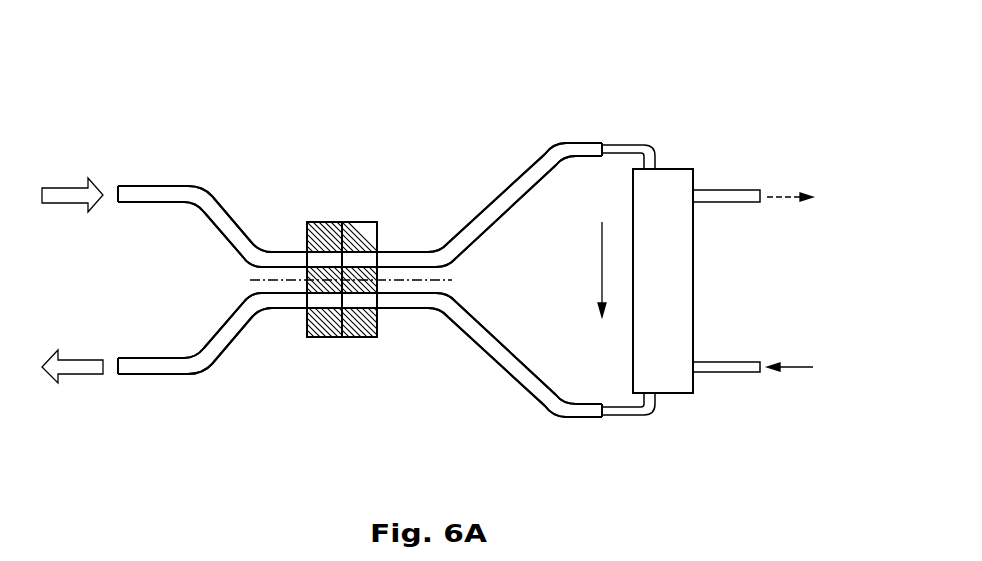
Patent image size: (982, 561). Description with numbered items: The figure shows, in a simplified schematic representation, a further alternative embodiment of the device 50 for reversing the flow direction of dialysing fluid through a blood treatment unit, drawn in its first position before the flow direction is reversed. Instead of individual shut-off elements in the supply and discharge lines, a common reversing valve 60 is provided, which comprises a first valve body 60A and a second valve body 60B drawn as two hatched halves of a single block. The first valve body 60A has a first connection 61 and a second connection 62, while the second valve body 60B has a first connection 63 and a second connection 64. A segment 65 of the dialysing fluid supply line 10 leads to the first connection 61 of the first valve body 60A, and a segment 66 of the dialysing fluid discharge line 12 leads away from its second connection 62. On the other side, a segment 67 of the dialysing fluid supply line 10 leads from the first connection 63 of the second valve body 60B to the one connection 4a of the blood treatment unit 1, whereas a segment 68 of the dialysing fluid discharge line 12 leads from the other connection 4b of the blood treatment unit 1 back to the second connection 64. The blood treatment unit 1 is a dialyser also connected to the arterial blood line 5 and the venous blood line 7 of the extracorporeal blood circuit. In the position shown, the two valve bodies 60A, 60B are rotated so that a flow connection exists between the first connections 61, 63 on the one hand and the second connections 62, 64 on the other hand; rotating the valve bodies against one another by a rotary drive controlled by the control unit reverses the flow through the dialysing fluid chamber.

The dialyser 1 is at (705, 166).
The inlet of dialysing fluid chamber 4a is at (657, 168).
The outlet of dialysing fluid chamber 4b is at (658, 394).
The arterial blood line 5 is at (733, 372).
The venous blood line 7 is at (732, 201).
The dialysing fluid supply line 10 is at (153, 187).
The dialysing fluid discharge line 12 is at (150, 375).
The device for reversing the flow direction 50 is at (325, 267).
The reversing valve 60 is at (365, 222).
The first valve body 60A is at (320, 336).
The second valve body 60B is at (355, 336).
The first connection of first valve body 61 is at (303, 251).
The second connection of first valve body 62 is at (305, 309).
The first connection of second valve body 63 is at (380, 251).
The second connection of second valve body 64 is at (378, 309).
The segment of dialysing fluid line 65 is at (203, 197).
The segment of dialysing fluid line 66 is at (215, 355).
The segment of dialysing fluid line 67 is at (553, 148).
The segment of dialysing fluid line 68 is at (525, 380).